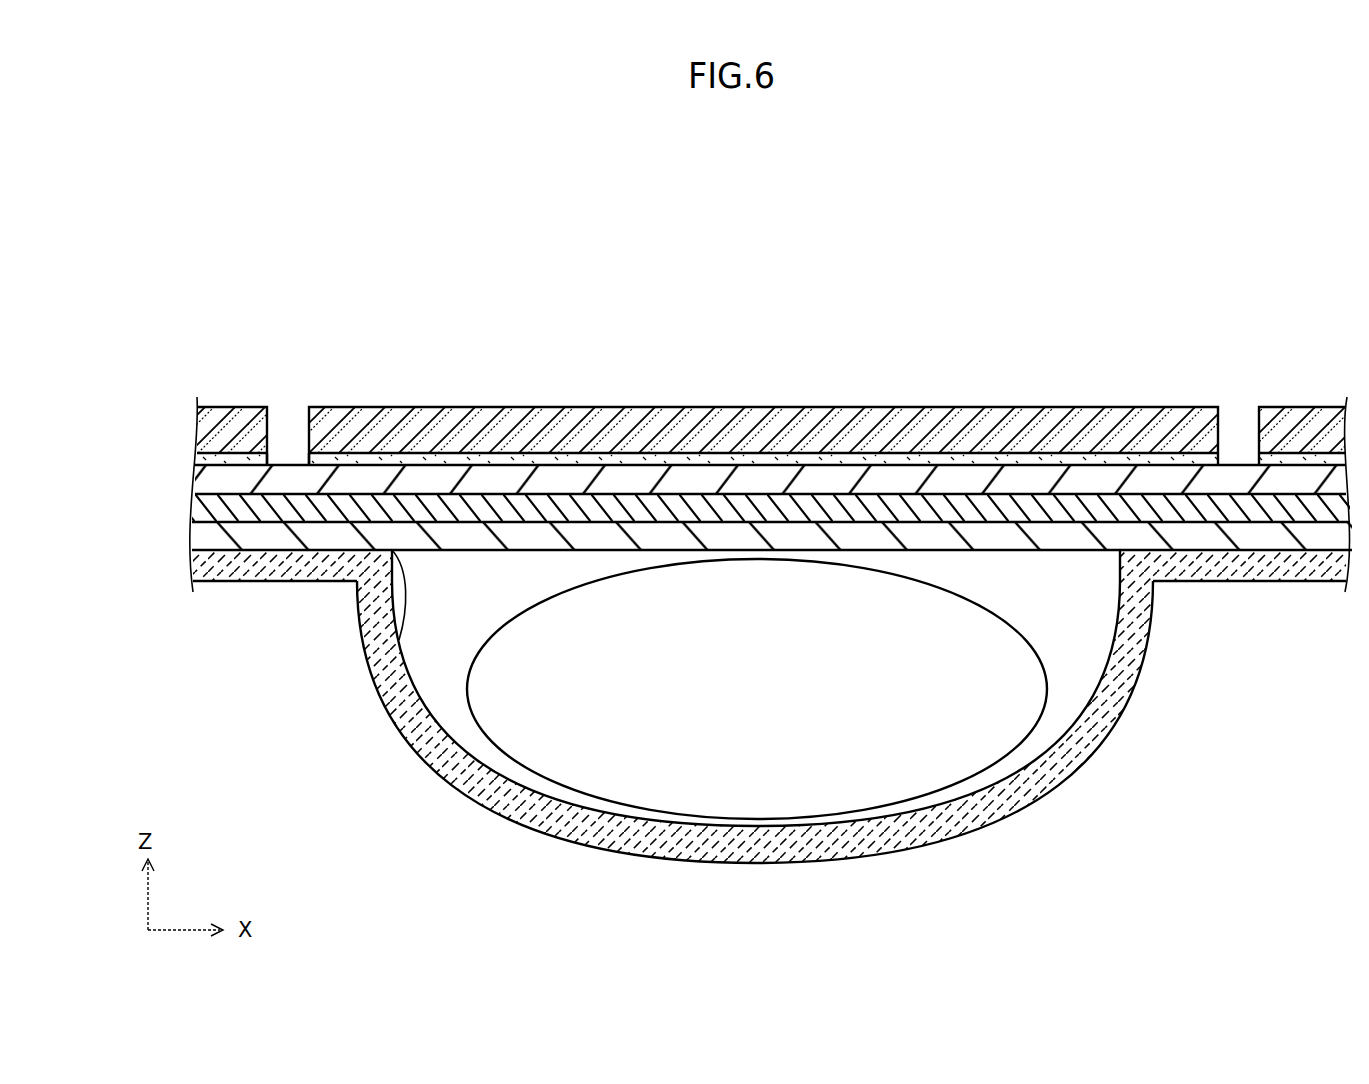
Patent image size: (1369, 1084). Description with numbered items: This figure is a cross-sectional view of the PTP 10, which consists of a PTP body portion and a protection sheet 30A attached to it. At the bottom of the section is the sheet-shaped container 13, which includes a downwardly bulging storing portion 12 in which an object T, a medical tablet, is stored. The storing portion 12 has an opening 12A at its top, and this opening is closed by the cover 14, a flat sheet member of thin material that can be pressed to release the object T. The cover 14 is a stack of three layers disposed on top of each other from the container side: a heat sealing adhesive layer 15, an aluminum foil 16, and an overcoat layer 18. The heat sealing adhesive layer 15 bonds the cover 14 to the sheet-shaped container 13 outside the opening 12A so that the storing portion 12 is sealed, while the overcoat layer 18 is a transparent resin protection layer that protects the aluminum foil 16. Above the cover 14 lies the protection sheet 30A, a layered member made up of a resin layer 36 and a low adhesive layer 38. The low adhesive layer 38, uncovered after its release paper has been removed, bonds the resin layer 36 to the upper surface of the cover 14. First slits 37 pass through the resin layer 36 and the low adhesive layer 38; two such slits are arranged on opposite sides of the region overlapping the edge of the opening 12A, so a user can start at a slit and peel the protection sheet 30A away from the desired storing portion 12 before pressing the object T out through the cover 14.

The PTP 10 is at (806, 194).
The storing portion 12 is at (460, 790).
The opening 12A is at (373, 668).
The sheet-shaped container 13 is at (227, 567).
The cover 14 is at (113, 477).
The heat sealing adhesive layer 15 is at (197, 537).
The aluminum foil 16 is at (197, 511).
The overcoat layer 18 is at (196, 488).
The protection sheet 30A is at (113, 345).
The resin layer 36 is at (207, 427).
The first slit 37 is at (270, 436).
The low adhesive layer 38 is at (200, 461).
The object T is at (745, 803).